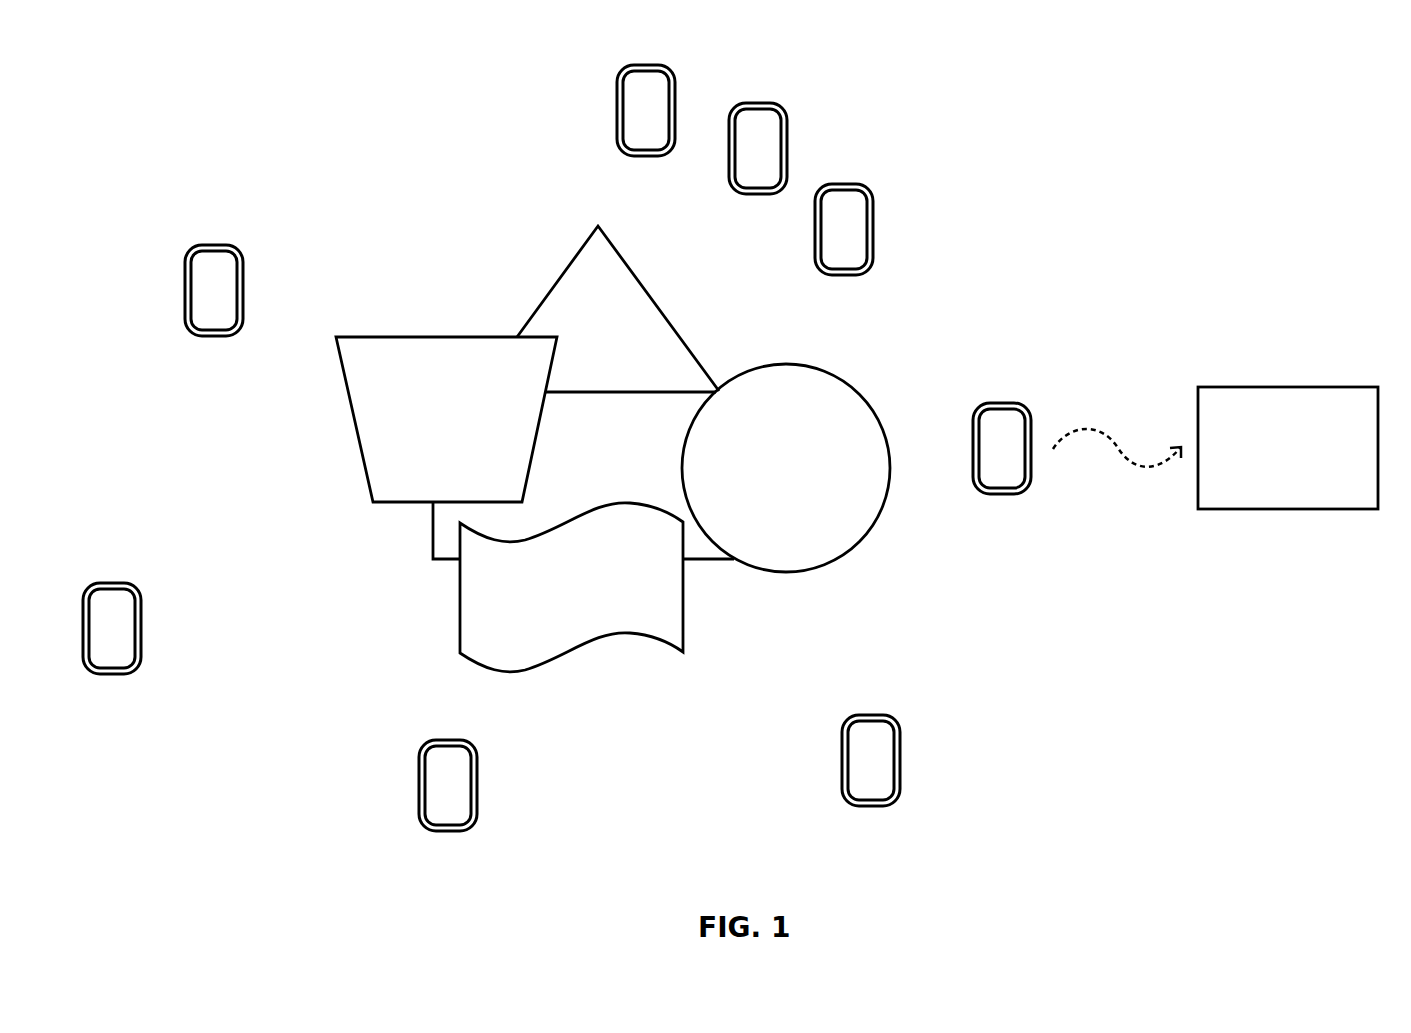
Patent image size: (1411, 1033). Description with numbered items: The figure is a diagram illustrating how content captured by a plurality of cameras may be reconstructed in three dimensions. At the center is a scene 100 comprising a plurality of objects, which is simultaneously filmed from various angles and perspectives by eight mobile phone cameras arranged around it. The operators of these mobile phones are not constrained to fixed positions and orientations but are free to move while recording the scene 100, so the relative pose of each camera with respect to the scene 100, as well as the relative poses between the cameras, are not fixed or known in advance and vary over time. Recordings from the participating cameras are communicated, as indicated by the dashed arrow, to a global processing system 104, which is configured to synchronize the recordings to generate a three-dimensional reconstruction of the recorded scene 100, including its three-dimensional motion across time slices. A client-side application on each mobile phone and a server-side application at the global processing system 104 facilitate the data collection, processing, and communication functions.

The scene 100 is at (644, 288).
The global processing system 104 is at (1348, 387).